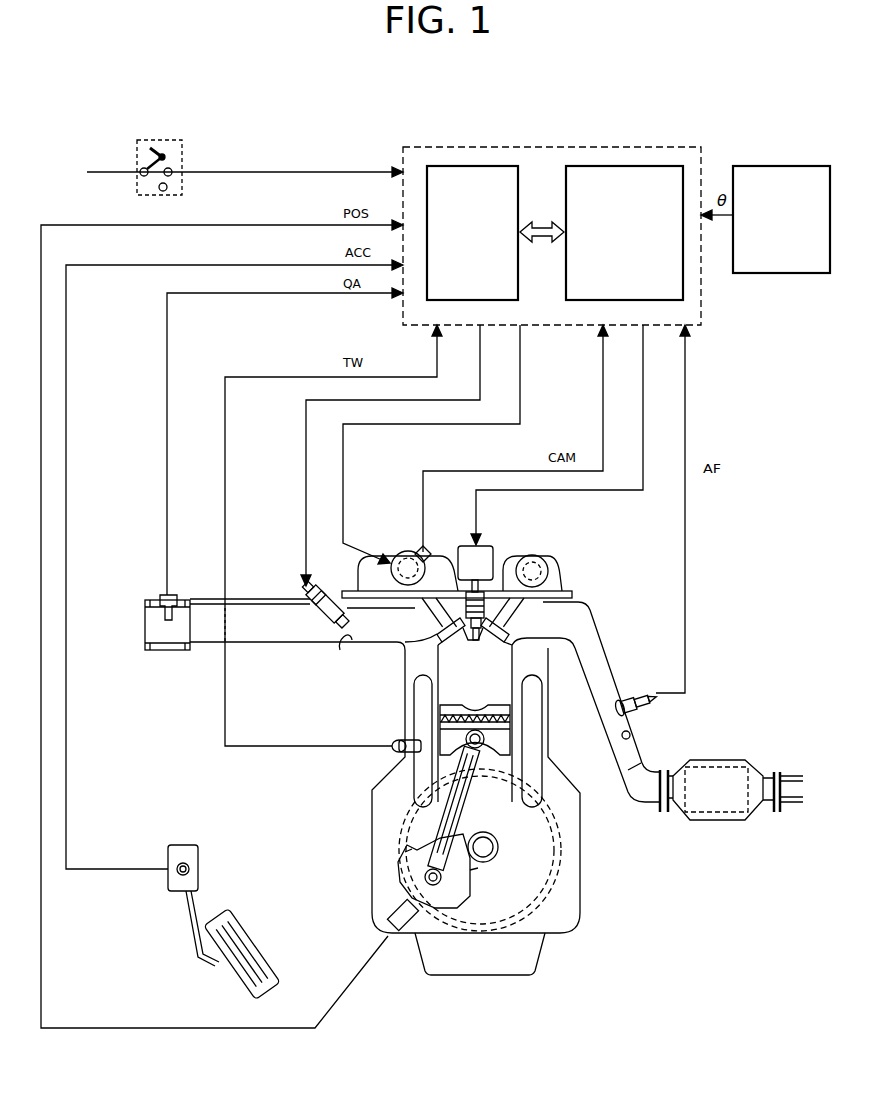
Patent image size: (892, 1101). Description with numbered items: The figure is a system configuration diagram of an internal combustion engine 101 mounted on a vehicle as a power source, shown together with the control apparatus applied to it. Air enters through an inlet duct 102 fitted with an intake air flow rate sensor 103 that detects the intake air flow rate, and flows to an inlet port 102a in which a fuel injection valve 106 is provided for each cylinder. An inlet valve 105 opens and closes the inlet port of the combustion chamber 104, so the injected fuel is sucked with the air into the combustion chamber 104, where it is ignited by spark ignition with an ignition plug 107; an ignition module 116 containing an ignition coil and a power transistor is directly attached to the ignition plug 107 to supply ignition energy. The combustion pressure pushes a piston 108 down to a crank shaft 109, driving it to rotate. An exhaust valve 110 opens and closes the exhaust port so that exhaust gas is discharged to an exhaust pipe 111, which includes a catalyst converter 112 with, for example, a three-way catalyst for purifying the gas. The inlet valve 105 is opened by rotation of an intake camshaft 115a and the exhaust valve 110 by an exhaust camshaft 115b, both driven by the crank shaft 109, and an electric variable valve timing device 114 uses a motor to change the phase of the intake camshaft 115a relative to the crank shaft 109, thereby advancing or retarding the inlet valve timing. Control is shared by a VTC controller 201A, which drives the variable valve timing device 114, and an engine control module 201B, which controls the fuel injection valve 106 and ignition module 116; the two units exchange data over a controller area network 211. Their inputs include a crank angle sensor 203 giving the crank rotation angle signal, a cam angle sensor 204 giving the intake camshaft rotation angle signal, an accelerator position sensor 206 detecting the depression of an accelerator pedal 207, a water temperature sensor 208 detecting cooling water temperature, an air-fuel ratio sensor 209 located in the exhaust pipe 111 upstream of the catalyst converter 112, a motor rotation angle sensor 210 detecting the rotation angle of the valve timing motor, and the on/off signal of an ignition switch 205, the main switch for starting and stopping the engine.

The internal combustion engine 101 is at (553, 900).
The inlet duct 102 is at (172, 650).
The inlet port 102a is at (345, 650).
The intake air flow rate sensor 103 is at (172, 597).
The combustion chamber 104 is at (483, 668).
The inlet valve 105 is at (430, 640).
The fuel injection valve 106 is at (335, 618).
The ignition plug 107 is at (545, 560).
The piston 108 is at (497, 742).
The crank shaft 109 is at (498, 847).
The exhaust valve 110 is at (485, 608).
The exhaust pipe 111 is at (630, 738).
The catalyst converter 112 is at (730, 760).
The variable valve timing device 114 is at (360, 573).
The intake camshaft 115a is at (405, 550).
The exhaust camshaft 115b is at (549, 576).
The ignition module 116 is at (490, 548).
The VTC controller 201A is at (632, 166).
The engine control module 201B is at (472, 166).
The crank angle sensor 203 is at (390, 908).
The cam angle sensor 204 is at (432, 552).
The ignition switch 205 is at (163, 140).
The accelerator position sensor 206 is at (200, 858).
The accelerator pedal 207 is at (256, 938).
The water temperature sensor 208 is at (398, 740).
The air-fuel ratio sensor 209 is at (650, 698).
The motor rotation angle sensor 210 is at (776, 166).
The controller area network 211 is at (545, 222).